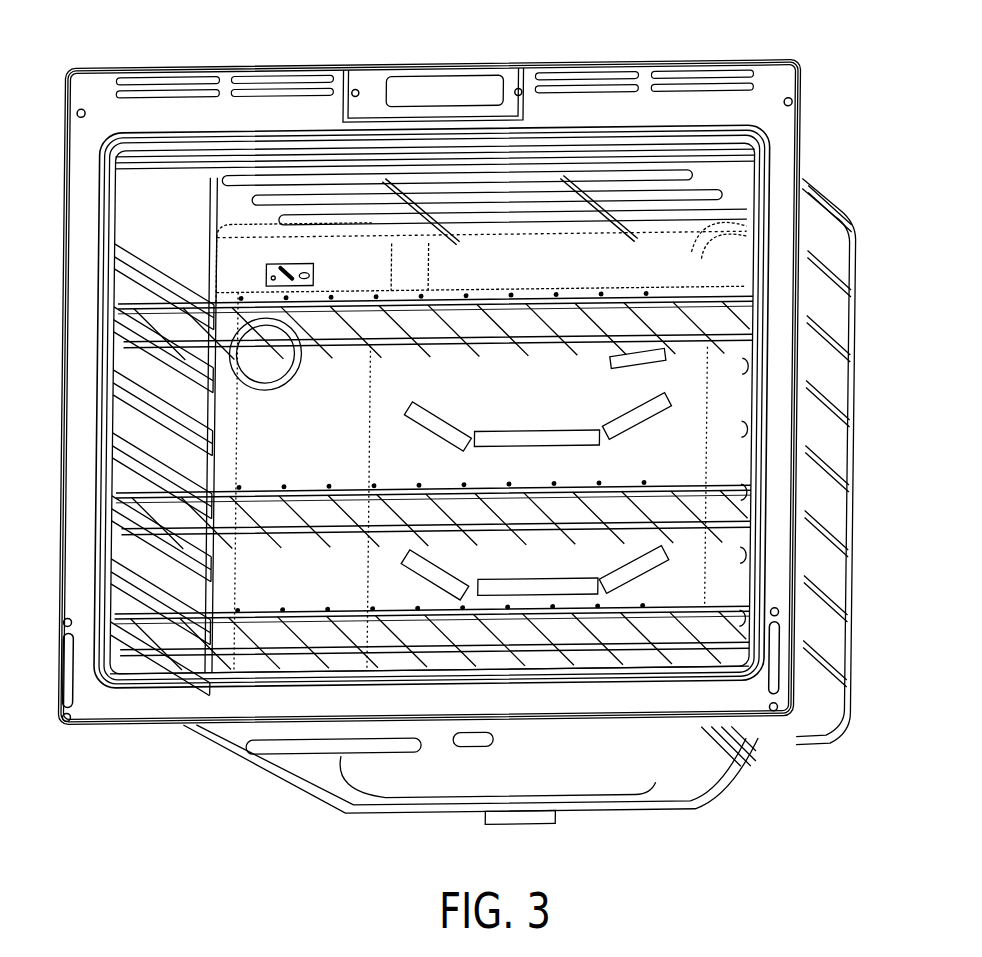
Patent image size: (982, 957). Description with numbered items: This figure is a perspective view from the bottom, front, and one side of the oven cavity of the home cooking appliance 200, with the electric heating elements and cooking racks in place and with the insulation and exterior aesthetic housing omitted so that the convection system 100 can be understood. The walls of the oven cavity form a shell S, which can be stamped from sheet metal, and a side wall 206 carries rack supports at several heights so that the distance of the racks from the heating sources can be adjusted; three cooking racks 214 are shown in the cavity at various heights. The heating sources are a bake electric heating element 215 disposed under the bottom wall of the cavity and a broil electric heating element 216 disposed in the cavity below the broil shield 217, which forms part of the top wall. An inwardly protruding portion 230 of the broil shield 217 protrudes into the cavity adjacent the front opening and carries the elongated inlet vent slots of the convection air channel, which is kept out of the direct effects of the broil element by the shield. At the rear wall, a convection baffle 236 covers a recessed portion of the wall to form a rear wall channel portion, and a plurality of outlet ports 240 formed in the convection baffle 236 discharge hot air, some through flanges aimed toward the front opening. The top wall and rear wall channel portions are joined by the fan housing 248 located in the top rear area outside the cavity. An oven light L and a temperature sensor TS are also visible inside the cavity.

The convection system 100 is at (668, 385).
The home cooking appliance 200 is at (868, 695).
The side wall 206 is at (128, 222).
The cooking rack 214 is at (133, 310).
The bake electric heating element 215 is at (277, 770).
The broil electric heating element 216 is at (228, 190).
The broil shield 217 is at (148, 193).
The inwardly protruding portion 230 is at (202, 162).
The convection baffle 236 is at (605, 405).
The outlet ports 240 is at (513, 360).
The fan housing 248 is at (690, 262).
The oven light L is at (263, 365).
The shell S is at (840, 267).
The temperature sensor TS is at (313, 268).